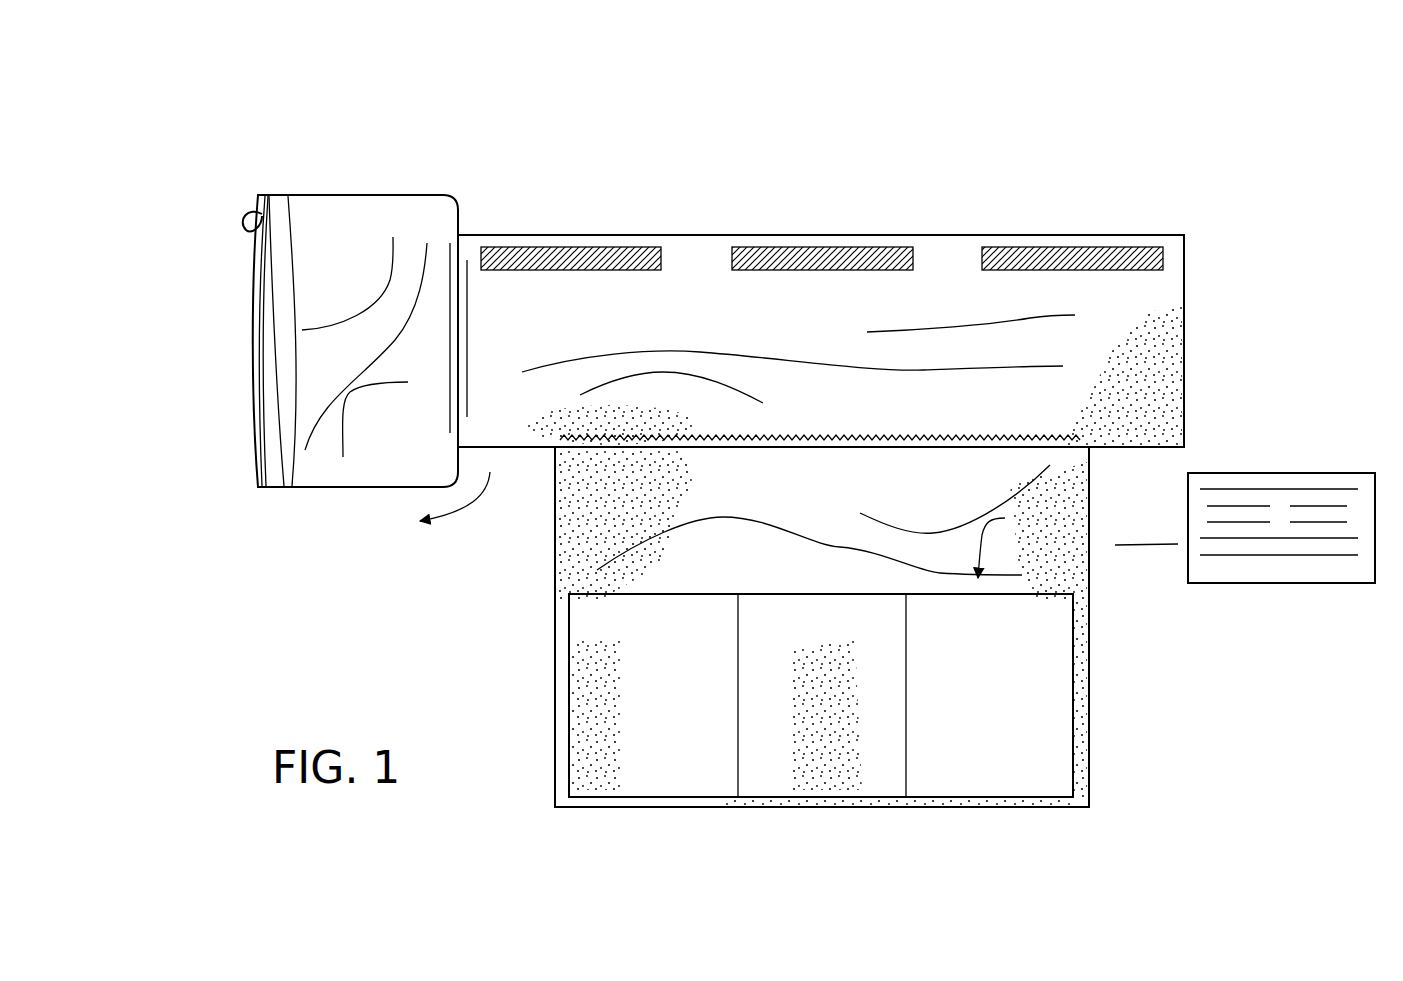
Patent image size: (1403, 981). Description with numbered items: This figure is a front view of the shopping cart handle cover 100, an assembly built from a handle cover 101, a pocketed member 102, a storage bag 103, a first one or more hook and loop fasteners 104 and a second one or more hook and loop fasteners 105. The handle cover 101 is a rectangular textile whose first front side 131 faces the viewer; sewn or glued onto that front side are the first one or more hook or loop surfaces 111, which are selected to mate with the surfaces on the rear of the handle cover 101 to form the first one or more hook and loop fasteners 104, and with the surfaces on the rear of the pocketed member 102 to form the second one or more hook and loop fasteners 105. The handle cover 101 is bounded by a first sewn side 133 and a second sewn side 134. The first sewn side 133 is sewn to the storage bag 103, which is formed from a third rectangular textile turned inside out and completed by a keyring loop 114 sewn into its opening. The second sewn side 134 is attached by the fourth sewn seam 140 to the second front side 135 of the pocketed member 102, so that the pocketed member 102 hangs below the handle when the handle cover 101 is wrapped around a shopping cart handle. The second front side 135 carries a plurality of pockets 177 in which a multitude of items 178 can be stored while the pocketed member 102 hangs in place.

The shopping cart handle cover 100 is at (203, 147).
The handle cover 101 is at (1162, 329).
The pocketed member 102 is at (1057, 487).
The storage bag 103 is at (421, 208).
The first one or more hook and loop fasteners 104 is at (998, 272).
The second one or more hook and loop fasteners 105 is at (616, 271).
The first one or more hook or loop surfaces 111 is at (1020, 247).
The keyring loop 114 is at (250, 226).
The first front side 131 is at (1009, 313).
The first sewn side 133 is at (460, 408).
The second sewn side 134 is at (778, 447).
The second front side 135 is at (820, 803).
The fourth sewn seam 140 is at (931, 445).
The plurality of pockets 177 is at (698, 739).
The multitude of items 178 is at (1277, 478).